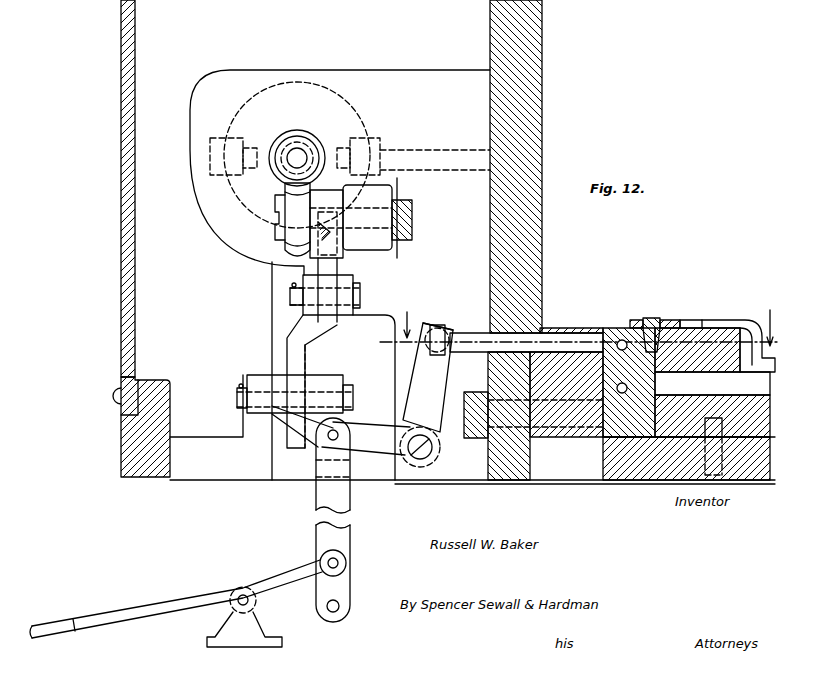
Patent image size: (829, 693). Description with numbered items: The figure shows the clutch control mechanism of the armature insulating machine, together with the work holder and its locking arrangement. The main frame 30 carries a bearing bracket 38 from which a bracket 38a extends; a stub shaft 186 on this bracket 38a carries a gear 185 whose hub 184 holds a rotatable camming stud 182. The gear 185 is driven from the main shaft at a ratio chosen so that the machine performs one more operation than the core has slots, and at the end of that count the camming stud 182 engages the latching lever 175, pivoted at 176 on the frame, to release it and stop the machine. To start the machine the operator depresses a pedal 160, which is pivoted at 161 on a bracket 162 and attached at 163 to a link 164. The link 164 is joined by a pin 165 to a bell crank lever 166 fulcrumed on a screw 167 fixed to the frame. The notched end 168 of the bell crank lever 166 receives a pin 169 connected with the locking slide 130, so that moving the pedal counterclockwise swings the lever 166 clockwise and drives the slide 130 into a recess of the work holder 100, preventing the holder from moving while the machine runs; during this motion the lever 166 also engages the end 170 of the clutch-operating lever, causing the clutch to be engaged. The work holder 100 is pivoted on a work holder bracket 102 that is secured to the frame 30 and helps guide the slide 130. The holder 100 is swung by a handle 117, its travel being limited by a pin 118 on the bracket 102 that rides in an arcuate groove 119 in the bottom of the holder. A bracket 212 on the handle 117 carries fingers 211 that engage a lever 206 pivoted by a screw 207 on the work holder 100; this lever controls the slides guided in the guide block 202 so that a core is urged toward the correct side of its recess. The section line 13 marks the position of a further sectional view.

The main frame 30 is at (525, 74).
The bearing bracket 38 is at (403, 70).
The bracket 38a is at (376, 192).
The hub 184 is at (318, 204).
The stub shaft 186 is at (282, 228).
The gear 185 is at (290, 246).
The camming stud 182 is at (340, 259).
The pivot 176 is at (356, 300).
The latching lever 175 is at (338, 329).
The end of lever 170 is at (277, 380).
The pin 165 is at (342, 430).
The bell crank lever 166 is at (368, 450).
The screw 167 is at (432, 451).
The link 164 is at (351, 492).
The attachment point 163 is at (336, 561).
The pivot 161 is at (245, 596).
The bracket 162 is at (230, 624).
The pedal 160 is at (57, 620).
The section line 13- 13 is at (580, 319).
The notched end 168 is at (438, 333).
The pin 169 is at (450, 341).
The slide 130 is at (474, 345).
The work holder 100 is at (612, 328).
The handle 117 is at (706, 387).
The arcuate groove 119 is at (712, 418).
The pin 118 is at (724, 424).
The work holder bracket 102 is at (613, 483).
The lever 206 is at (632, 320).
The screw 207 is at (651, 318).
The fingers 211 is at (686, 320).
The bracket 212 is at (706, 320).
The guide block 202 is at (726, 320).